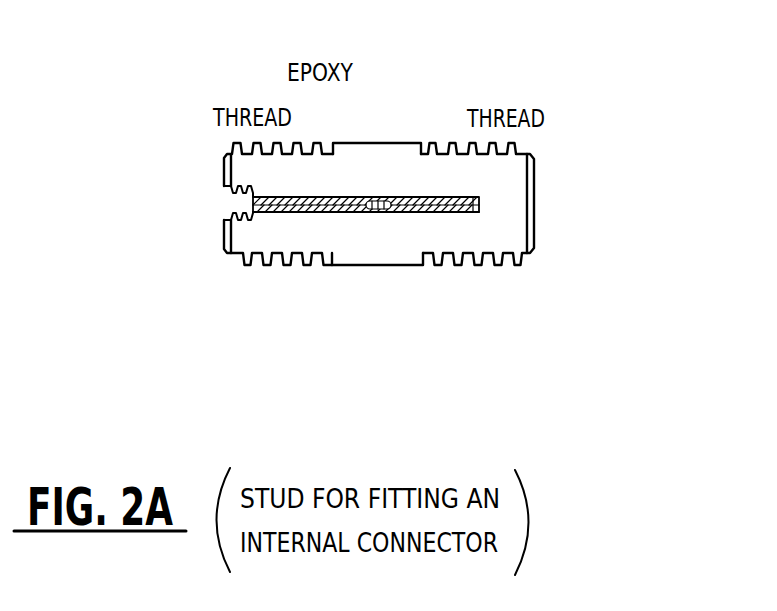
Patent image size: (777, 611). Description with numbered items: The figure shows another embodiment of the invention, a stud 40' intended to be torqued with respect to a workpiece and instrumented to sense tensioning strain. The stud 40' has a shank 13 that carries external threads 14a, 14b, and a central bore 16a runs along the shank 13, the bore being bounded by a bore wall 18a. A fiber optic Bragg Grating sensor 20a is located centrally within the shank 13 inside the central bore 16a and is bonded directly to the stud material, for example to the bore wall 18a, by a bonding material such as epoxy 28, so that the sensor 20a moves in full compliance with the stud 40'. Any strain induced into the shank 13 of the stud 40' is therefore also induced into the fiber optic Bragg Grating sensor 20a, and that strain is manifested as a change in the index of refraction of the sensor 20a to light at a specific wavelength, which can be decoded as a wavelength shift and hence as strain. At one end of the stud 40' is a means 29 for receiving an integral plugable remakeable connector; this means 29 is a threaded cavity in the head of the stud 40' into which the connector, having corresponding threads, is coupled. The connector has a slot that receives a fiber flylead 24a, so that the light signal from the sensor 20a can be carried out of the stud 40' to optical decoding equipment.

The stud 40' is at (289, 136).
The shank 13 is at (398, 259).
The threads 14a is at (485, 265).
The threads 14b is at (278, 265).
The fiber flylead 24a is at (252, 199).
The means for receiving an integral plugable remakeable connector 29 is at (229, 211).
The epoxy 28 is at (318, 197).
The fiber optic Bragg Grating sensor 20a is at (405, 197).
The bore wall 18a is at (479, 203).
The central bore 16a is at (466, 212).